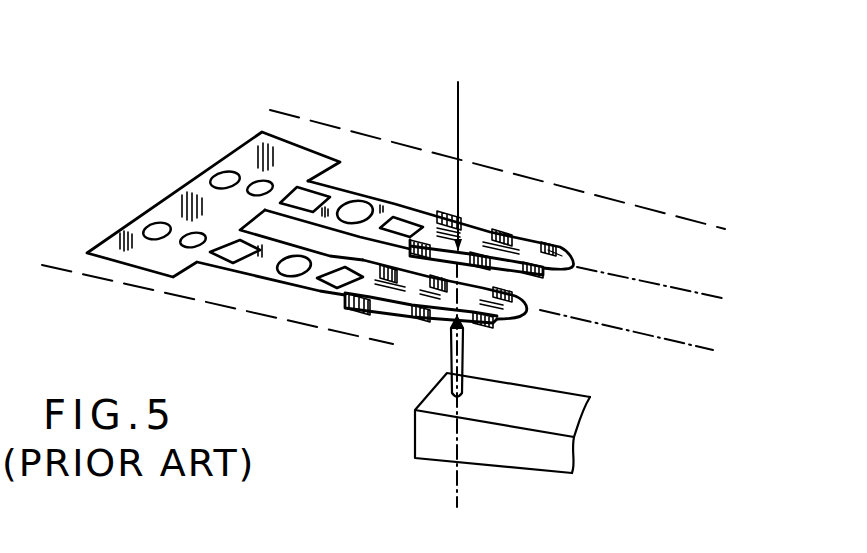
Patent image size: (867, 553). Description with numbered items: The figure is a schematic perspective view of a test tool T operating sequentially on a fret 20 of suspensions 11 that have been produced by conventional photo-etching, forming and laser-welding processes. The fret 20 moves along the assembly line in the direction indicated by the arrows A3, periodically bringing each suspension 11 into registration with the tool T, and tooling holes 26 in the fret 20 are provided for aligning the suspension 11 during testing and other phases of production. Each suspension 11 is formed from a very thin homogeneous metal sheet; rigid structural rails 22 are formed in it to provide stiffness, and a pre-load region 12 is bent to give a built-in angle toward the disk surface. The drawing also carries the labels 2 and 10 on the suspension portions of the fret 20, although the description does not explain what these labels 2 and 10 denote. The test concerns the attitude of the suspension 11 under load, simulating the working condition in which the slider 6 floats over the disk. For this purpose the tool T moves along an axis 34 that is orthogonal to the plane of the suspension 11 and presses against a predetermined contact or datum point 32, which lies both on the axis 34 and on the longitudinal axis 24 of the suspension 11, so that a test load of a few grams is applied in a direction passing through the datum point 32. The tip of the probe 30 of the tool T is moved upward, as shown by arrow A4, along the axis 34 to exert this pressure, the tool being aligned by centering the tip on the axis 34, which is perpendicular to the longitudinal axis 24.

The fret 20 is at (204, 143).
The tooling holes 26 is at (222, 183).
The electrical contact 2 is at (358, 190).
The crimp barrel serrations 10 is at (448, 228).
The pre-load region 12 is at (400, 212).
The rigid structural rails 22 is at (522, 240).
The slider 6 is at (489, 277).
The suspension 11 is at (538, 306).
The longitudinal axis 24 is at (685, 341).
The axis 34 is at (458, 152).
The datum point 32 is at (449, 356).
The probe 30 is at (465, 338).
The test tool T is at (485, 455).
The arrows indicating fret movement direction A3 is at (432, 151).
The arrow indicating probe movement A4 is at (375, 396).